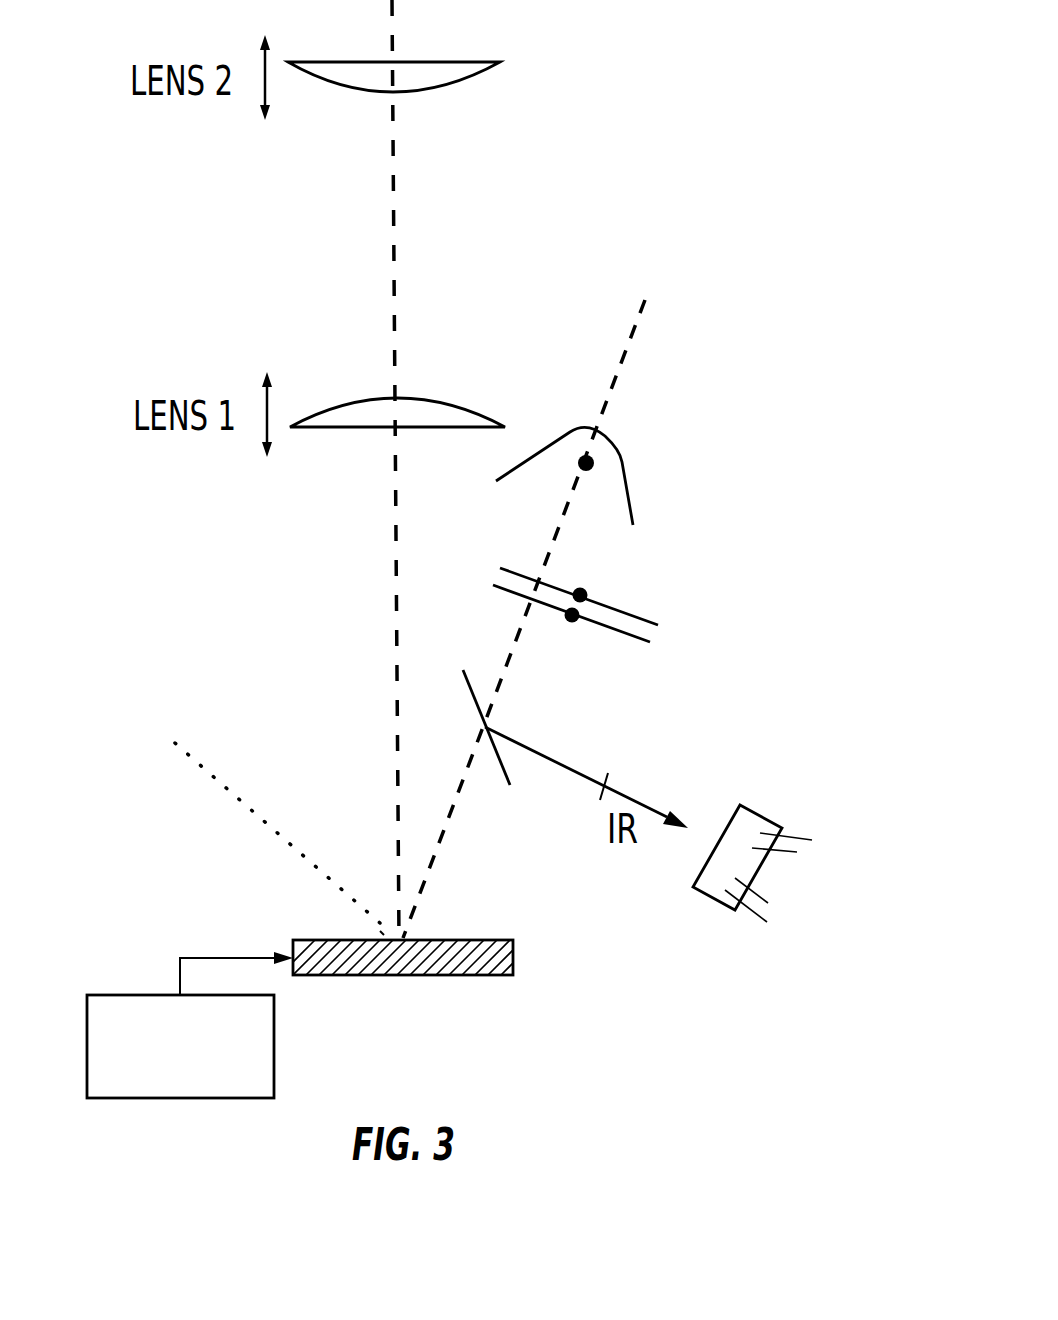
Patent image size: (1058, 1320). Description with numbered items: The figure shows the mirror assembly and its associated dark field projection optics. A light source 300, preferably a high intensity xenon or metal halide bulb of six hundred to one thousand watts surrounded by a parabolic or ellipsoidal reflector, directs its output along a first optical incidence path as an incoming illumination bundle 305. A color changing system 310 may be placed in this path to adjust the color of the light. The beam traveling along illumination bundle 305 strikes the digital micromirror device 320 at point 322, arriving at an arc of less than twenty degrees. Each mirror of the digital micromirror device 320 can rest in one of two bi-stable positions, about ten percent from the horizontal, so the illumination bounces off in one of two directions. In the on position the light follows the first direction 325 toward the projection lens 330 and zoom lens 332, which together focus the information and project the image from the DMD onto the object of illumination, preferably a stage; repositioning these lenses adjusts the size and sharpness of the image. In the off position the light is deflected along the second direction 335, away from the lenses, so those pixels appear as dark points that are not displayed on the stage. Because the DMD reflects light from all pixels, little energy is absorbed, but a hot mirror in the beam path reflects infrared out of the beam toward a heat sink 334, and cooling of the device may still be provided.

The light source 300 is at (681, 481).
The illumination bundle 305 is at (524, 619).
The color disks 310 is at (637, 620).
The digital micromirror device 320 is at (445, 845).
The point of incidence 322 is at (295, 903).
The first direction 325 is at (214, 549).
The projection lens 330 is at (422, 386).
The zoom lens 332 is at (504, 400).
The heat sink 334 is at (779, 853).
The second direction 335 is at (253, 833).